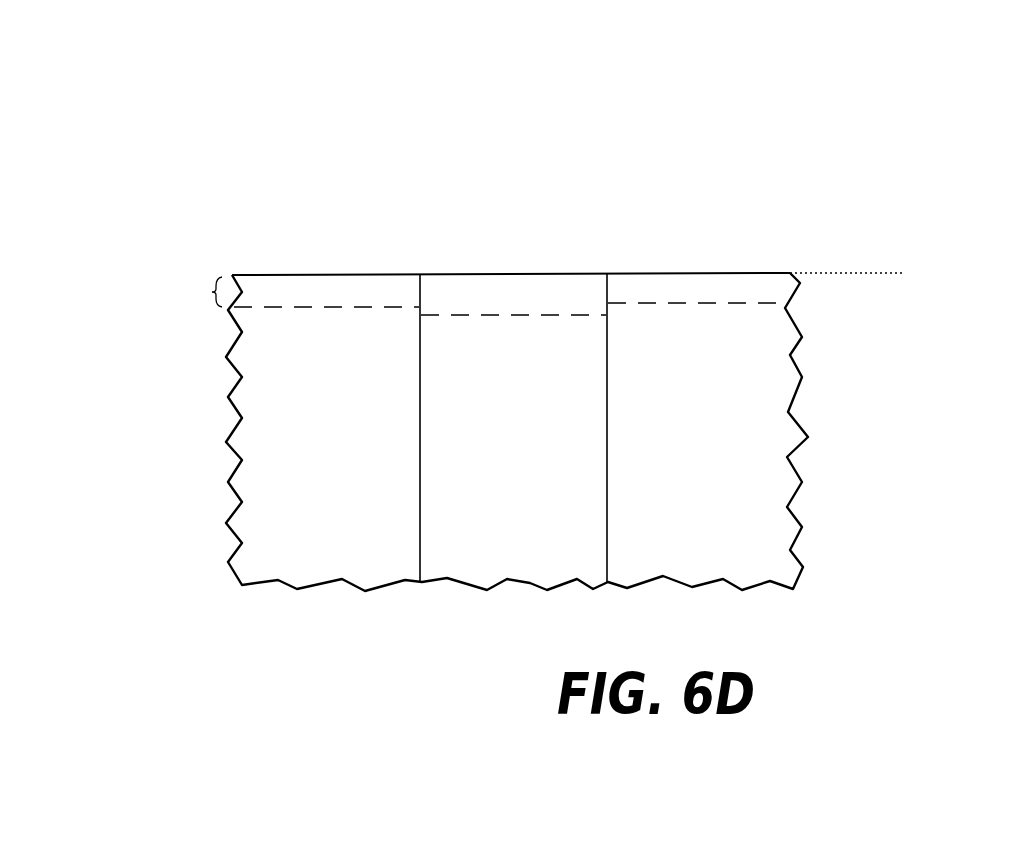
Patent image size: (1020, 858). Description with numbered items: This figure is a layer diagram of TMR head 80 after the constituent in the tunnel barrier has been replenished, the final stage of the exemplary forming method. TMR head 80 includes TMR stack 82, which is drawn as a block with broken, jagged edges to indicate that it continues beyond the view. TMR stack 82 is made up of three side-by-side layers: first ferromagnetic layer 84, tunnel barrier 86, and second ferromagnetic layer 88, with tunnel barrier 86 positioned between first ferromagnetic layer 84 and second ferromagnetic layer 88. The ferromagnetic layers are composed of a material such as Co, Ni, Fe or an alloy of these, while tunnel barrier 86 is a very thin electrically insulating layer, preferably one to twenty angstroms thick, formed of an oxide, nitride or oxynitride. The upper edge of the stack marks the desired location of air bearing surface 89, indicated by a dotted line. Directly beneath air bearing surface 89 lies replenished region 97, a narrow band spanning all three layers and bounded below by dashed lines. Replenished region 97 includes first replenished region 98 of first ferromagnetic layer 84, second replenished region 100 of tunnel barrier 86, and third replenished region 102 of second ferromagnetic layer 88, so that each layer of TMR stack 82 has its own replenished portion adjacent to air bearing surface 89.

The TMR head 80 is at (633, 121).
The TMR stack 82 is at (199, 373).
The first ferromagnetic layer 84 is at (363, 428).
The tunnel barrier 86 is at (553, 428).
The second ferromagnetic layer 88 is at (702, 371).
The air bearing surface 89 is at (847, 256).
The replenished region 97 is at (129, 279).
The first replenished region 98 is at (326, 291).
The second replenished region 100 is at (513, 294).
The third replenished region 102 is at (697, 289).